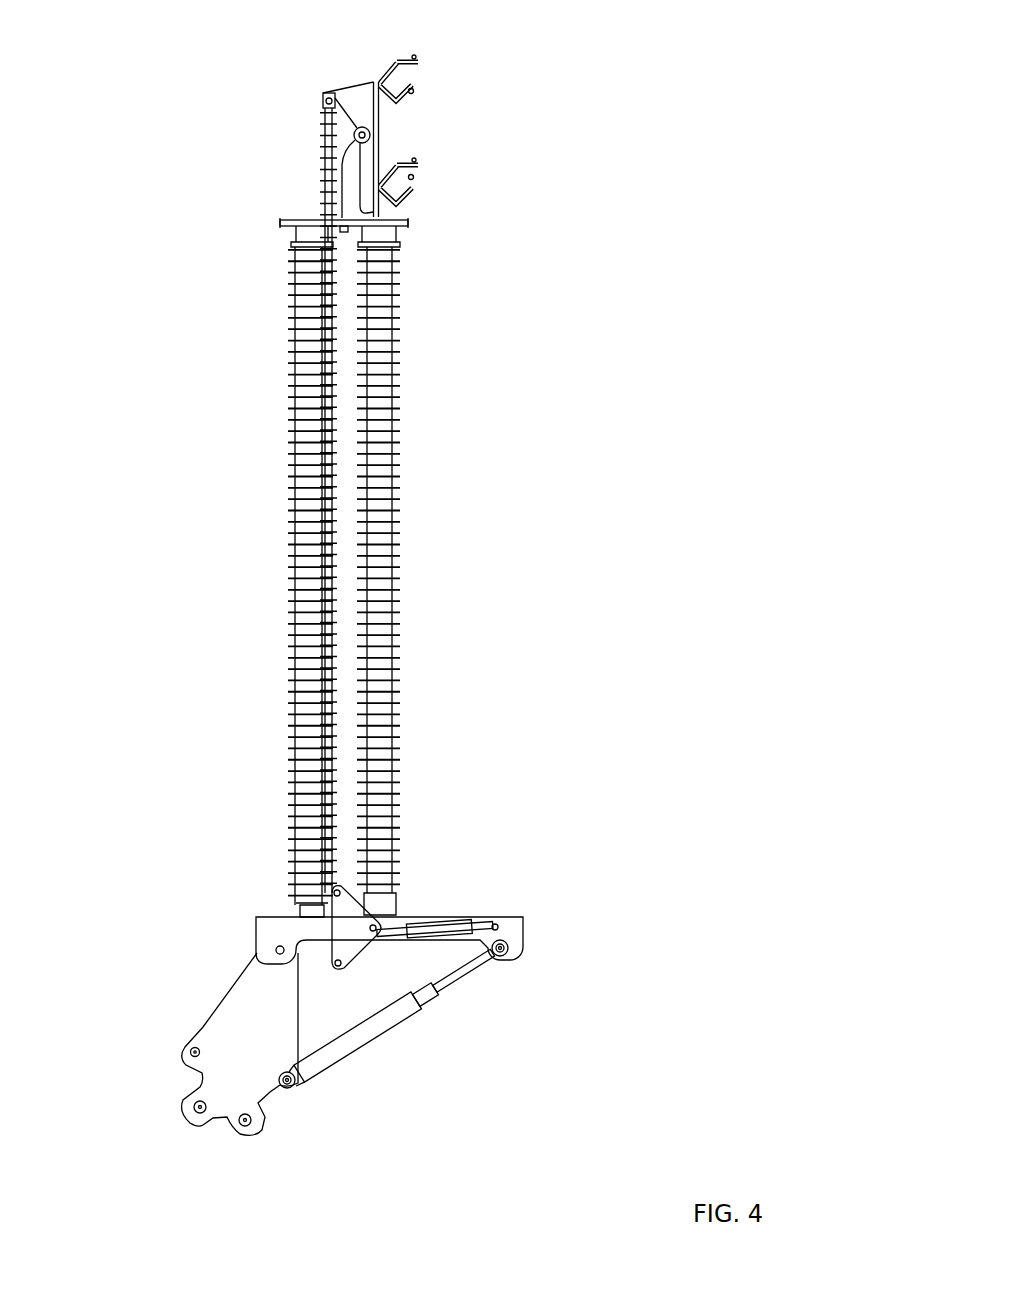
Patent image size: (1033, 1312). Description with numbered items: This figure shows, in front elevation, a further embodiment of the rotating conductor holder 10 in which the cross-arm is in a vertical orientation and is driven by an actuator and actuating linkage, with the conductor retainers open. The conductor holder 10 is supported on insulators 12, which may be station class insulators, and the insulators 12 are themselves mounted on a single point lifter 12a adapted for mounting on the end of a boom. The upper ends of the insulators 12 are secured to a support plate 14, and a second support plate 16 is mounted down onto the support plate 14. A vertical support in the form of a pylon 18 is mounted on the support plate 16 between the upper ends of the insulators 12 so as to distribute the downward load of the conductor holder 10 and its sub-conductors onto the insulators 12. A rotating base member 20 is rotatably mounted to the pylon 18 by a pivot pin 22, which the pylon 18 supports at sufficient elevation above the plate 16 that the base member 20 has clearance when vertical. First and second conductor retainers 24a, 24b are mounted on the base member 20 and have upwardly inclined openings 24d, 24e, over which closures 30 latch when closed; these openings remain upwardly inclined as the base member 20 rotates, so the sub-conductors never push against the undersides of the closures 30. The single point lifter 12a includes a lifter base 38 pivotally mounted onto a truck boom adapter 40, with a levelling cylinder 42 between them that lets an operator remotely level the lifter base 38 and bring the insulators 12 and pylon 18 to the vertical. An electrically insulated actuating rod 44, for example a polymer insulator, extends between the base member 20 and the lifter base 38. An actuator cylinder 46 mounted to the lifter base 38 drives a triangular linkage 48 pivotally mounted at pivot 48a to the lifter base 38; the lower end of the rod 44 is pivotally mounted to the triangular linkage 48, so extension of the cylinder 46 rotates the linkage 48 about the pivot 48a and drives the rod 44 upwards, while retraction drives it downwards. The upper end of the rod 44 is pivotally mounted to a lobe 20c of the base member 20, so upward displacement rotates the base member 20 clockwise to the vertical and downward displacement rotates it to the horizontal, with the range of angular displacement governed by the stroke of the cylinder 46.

The rotating conductor holder 10 is at (562, 73).
The insulators 12 is at (383, 540).
The single point lifter 12a is at (549, 1032).
The support plate 14 is at (381, 231).
The support plate 16 is at (385, 220).
The pylon 18 is at (347, 170).
The rotating base member 20 is at (360, 113).
The lobe 20c is at (323, 95).
The pivot pin 22 is at (360, 133).
The first conductor retainer 24a is at (413, 91).
The second conductor retainer 24b is at (423, 153).
The upwardly inclined opening 24d is at (402, 75).
The upwardly inclined opening 24e is at (413, 177).
The closures 30 is at (405, 57).
The lifter base 38 is at (279, 932).
The truck boom adapter 40 is at (245, 1023).
The levelling cylinder 42 is at (367, 1033).
The actuating rod 44 is at (323, 203).
The actuator cylinder 46 is at (469, 931).
The triangular linkage 48 is at (353, 921).
The pivot 48a is at (381, 920).